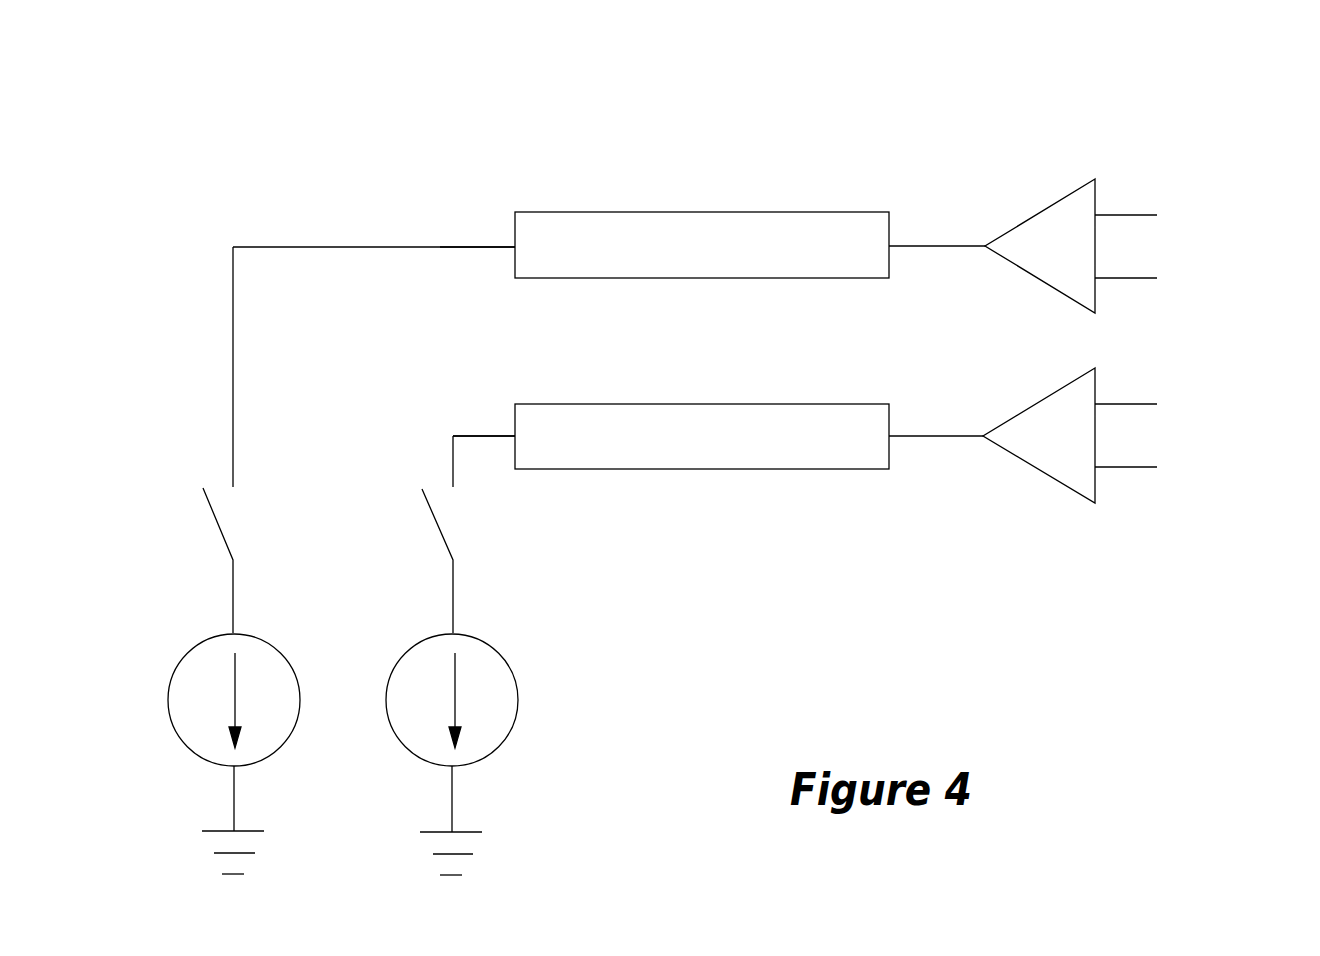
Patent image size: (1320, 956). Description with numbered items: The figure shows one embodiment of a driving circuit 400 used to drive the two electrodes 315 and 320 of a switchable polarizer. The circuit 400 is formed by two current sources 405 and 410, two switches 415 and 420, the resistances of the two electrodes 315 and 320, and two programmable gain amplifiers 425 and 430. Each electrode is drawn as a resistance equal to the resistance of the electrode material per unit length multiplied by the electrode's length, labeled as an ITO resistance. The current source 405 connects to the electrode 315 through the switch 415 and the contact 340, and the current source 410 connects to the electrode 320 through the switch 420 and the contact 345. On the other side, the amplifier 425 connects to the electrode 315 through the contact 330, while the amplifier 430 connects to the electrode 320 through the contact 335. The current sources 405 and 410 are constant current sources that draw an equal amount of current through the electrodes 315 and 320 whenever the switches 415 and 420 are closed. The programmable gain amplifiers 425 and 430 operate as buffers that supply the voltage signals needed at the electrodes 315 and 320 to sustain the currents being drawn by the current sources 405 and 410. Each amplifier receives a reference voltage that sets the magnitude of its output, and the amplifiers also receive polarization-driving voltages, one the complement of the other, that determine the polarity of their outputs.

The driving circuit 400 is at (702, 150).
The electrode 315 is at (702, 212).
The electrode 320 is at (702, 404).
The contact 330 is at (918, 246).
The contact 335 is at (918, 436).
The contact 340 is at (478, 247).
The contact 345 is at (478, 436).
The current source 405 is at (168, 692).
The current source 410 is at (513, 686).
The switch 415 is at (203, 500).
The switch 420 is at (453, 528).
The programmable gain amplifier 425 is at (1095, 179).
The programmable gain amplifier 430 is at (1095, 503).